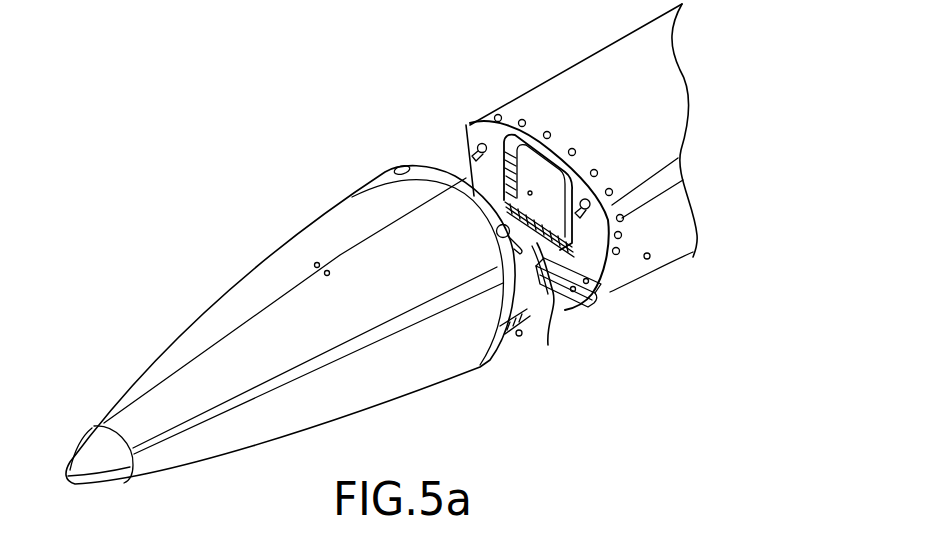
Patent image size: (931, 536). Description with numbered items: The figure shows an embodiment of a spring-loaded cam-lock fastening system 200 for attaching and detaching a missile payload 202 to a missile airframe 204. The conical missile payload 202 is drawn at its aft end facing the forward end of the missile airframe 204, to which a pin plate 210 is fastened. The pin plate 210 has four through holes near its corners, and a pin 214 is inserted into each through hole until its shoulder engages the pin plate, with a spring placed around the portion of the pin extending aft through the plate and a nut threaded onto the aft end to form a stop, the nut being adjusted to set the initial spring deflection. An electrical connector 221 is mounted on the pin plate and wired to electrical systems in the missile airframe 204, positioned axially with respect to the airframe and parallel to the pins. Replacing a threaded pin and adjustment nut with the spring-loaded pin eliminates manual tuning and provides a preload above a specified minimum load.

The spring-loaded cam-lock fastening system 200 is at (306, 108).
The missile payload 202 is at (220, 299).
The missile airframe 204 is at (558, 75).
The pin plate 210 is at (593, 227).
The pin 214 is at (610, 268).
The electrical connector 221 is at (548, 260).